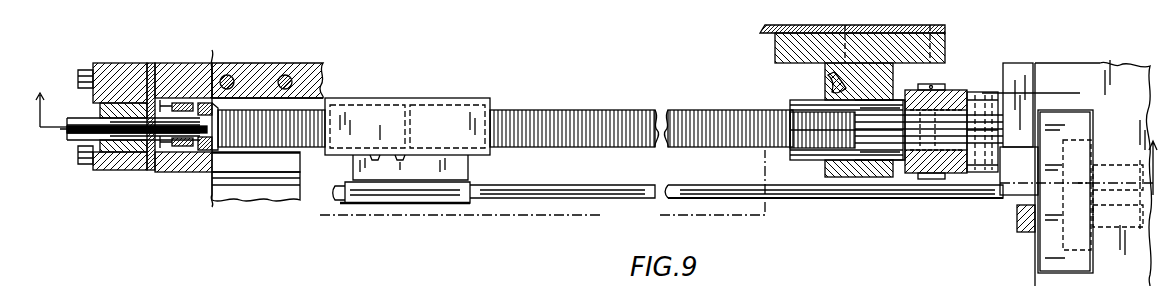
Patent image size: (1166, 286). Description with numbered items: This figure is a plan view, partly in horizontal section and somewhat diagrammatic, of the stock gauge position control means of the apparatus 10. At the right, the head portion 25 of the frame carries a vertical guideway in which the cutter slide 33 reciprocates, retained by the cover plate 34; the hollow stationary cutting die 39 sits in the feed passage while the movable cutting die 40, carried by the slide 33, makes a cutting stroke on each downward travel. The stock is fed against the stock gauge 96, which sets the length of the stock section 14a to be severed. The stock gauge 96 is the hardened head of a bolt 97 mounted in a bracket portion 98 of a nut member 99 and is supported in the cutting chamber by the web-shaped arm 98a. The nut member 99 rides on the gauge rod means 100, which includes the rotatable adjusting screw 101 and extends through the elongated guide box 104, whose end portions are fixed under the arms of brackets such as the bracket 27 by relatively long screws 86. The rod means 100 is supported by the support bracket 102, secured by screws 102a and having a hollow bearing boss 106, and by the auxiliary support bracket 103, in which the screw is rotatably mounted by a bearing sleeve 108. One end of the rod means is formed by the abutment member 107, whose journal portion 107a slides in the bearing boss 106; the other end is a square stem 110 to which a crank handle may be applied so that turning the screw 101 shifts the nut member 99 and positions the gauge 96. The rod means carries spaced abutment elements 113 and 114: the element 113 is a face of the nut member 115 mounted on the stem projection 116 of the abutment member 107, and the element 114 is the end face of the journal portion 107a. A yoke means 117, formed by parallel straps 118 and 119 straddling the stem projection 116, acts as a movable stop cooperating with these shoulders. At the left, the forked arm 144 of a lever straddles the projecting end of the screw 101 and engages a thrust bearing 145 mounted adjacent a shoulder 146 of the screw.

The apparatus 10 is at (597, 131).
The stock section 14a is at (795, 199).
The head portion 25 is at (1122, 75).
The bracket 27 is at (214, 57).
The cutter slide 33 is at (1076, 115).
The cover plate 34 is at (1036, 66).
The stationary cutting die 39 is at (1100, 228).
The movable cutting die 40 is at (1075, 152).
The screws 86 is at (285, 80).
The stock gauge 96 is at (522, 200).
The bolt 97 is at (424, 205).
The bracket portion 98 is at (380, 206).
The web-shaped arm 98a is at (468, 166).
The nut member 99 is at (453, 102).
The gauge rod means 100 is at (630, 106).
The adjusting screw 101 is at (552, 110).
The support bracket 102 is at (775, 46).
The screws 102a is at (945, 32).
The auxiliary support bracket 103 is at (118, 170).
The guide box 104 is at (318, 92).
The bearing boss 106 is at (858, 177).
The abutment member 107 is at (878, 162).
The journal portion 107a is at (828, 77).
The bearing sleeve 108 is at (98, 152).
The square stem 110 is at (67, 136).
The abutment element 113 is at (1016, 78).
The abutment element 114 is at (929, 127).
The nut member 115 is at (1033, 96).
The stem projection 116 is at (965, 176).
The yoke means 117 is at (942, 92).
The strap 118 is at (918, 178).
The strap 119 is at (930, 84).
The forked arm 144 is at (151, 170).
The thrust bearing 145 is at (202, 160).
The shoulder 146 is at (215, 108).